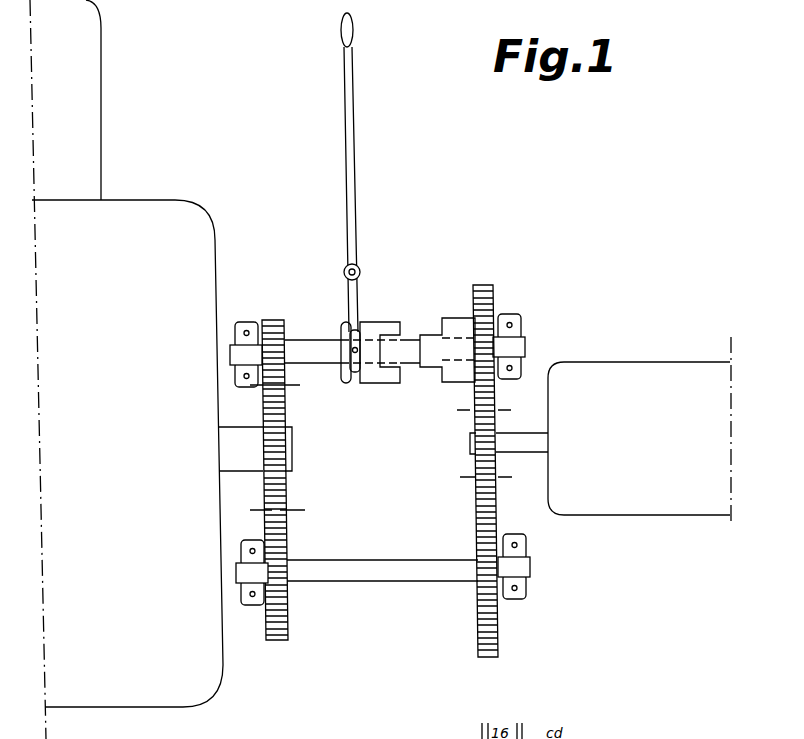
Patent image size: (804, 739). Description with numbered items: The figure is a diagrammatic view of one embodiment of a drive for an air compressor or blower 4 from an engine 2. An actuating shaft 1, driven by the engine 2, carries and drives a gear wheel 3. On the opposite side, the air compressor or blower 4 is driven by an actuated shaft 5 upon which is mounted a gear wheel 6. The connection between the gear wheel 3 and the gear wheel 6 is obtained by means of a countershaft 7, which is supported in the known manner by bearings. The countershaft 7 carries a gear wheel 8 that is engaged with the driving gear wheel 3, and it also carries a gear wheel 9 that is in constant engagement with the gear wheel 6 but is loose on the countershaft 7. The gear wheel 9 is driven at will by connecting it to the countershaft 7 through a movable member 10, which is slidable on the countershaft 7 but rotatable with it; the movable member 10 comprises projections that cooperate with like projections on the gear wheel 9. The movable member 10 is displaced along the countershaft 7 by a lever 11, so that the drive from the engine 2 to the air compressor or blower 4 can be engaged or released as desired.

The actuating shaft 1 is at (245, 458).
The engine 2 is at (185, 215).
The gear wheel 3 is at (287, 483).
The air compressor or blower 4 is at (596, 375).
The actuated shaft 5 is at (515, 443).
The gear wheel 6 is at (478, 460).
The countershaft 7 is at (305, 345).
The gear wheel 8 is at (270, 322).
The gear wheel 9 is at (484, 290).
The movable member 10 is at (378, 327).
The lever 11 is at (354, 223).